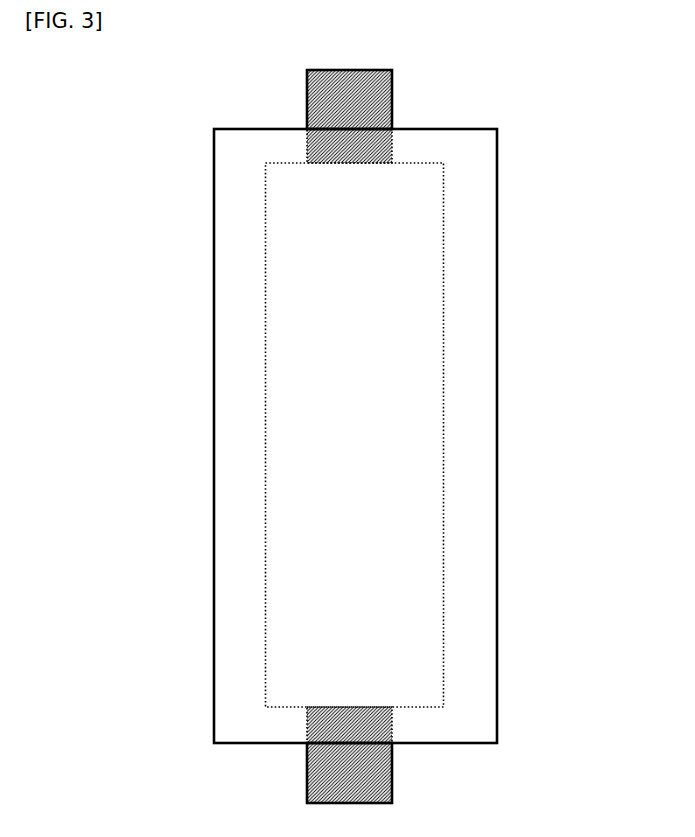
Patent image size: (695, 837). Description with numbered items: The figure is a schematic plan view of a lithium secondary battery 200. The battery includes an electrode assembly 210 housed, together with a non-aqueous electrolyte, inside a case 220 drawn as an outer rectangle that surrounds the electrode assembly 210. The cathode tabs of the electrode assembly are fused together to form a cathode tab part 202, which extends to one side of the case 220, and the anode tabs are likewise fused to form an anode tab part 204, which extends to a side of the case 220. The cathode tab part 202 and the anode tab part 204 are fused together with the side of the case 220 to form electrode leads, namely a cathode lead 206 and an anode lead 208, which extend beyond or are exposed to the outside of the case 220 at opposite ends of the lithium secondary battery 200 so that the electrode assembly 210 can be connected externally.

The lithium secondary battery 200 is at (89, 94).
The cathode tab part 202 is at (380, 146).
The anode tab part 204 is at (378, 720).
The cathode lead 206 is at (380, 87).
The anode lead 208 is at (378, 771).
The electrode assembly 210 is at (444, 265).
The case 220 is at (497, 333).